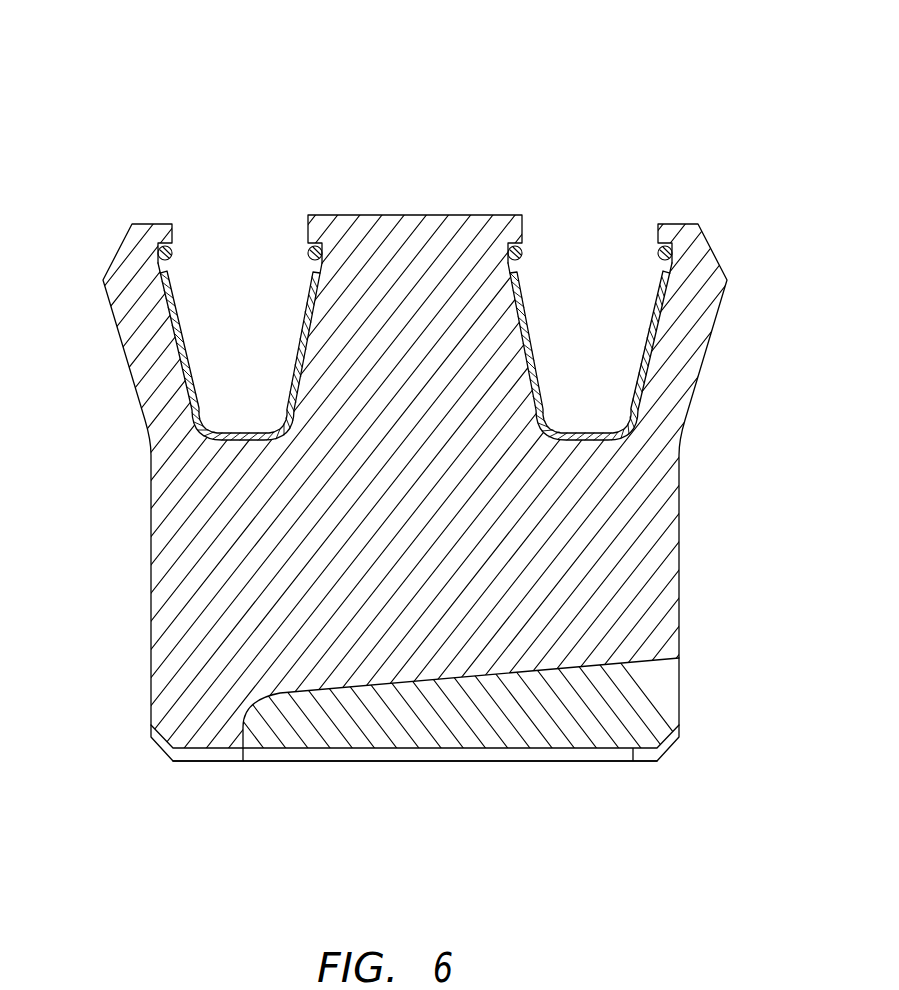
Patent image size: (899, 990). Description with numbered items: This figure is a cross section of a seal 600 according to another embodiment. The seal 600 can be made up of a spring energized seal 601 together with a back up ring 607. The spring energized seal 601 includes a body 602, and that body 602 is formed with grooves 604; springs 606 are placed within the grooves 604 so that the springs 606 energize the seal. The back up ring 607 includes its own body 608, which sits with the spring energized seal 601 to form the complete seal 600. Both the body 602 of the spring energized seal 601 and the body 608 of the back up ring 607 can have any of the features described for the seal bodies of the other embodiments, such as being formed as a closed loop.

The seal 600 is at (108, 50).
The spring energized seal 601 is at (697, 458).
The body 602 is at (652, 498).
The grooves 604 is at (234, 250).
The springs 606 is at (290, 361).
The back up ring 607 is at (340, 768).
The body 608 is at (465, 727).